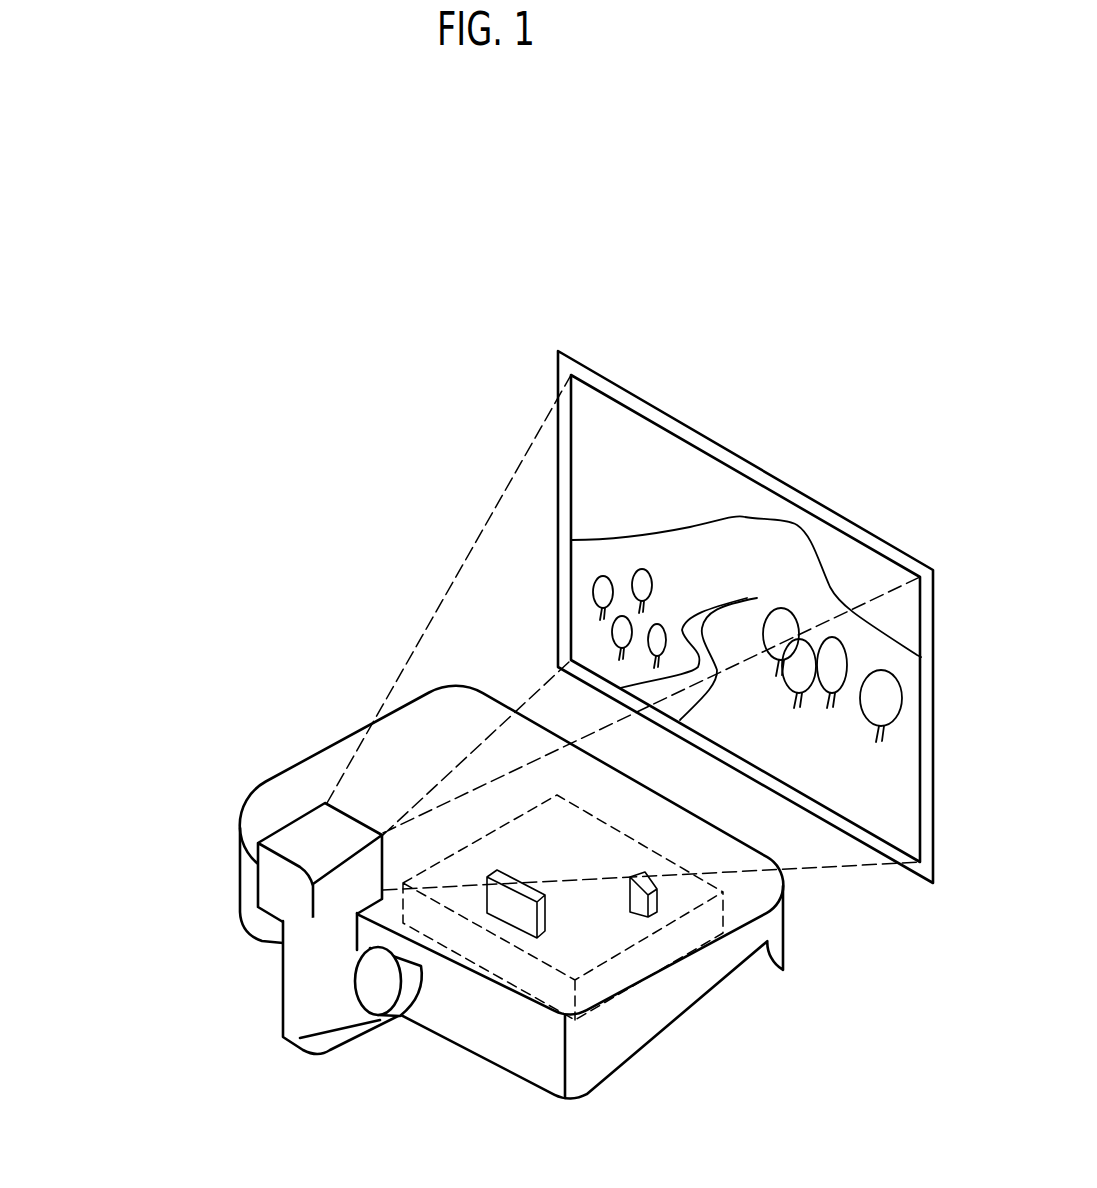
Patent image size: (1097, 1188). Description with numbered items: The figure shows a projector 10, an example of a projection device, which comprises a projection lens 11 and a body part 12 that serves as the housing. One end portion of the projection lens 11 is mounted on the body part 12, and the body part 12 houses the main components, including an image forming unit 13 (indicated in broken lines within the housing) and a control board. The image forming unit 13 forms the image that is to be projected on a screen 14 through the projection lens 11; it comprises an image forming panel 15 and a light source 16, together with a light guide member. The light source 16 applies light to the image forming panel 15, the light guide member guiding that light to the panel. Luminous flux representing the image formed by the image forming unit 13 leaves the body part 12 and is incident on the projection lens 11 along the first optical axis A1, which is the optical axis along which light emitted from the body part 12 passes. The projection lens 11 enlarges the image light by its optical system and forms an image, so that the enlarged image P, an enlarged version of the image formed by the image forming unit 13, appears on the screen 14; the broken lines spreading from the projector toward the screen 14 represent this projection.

The projector 10 is at (63, 1032).
The projection lens 11 is at (290, 1056).
The body part 12 is at (235, 912).
The image forming unit 13 is at (607, 806).
The screen 14 is at (711, 433).
The image forming panel 15 is at (557, 888).
The light source 16 is at (633, 913).
The first optical axis A1 is at (464, 942).
The image P is at (847, 551).